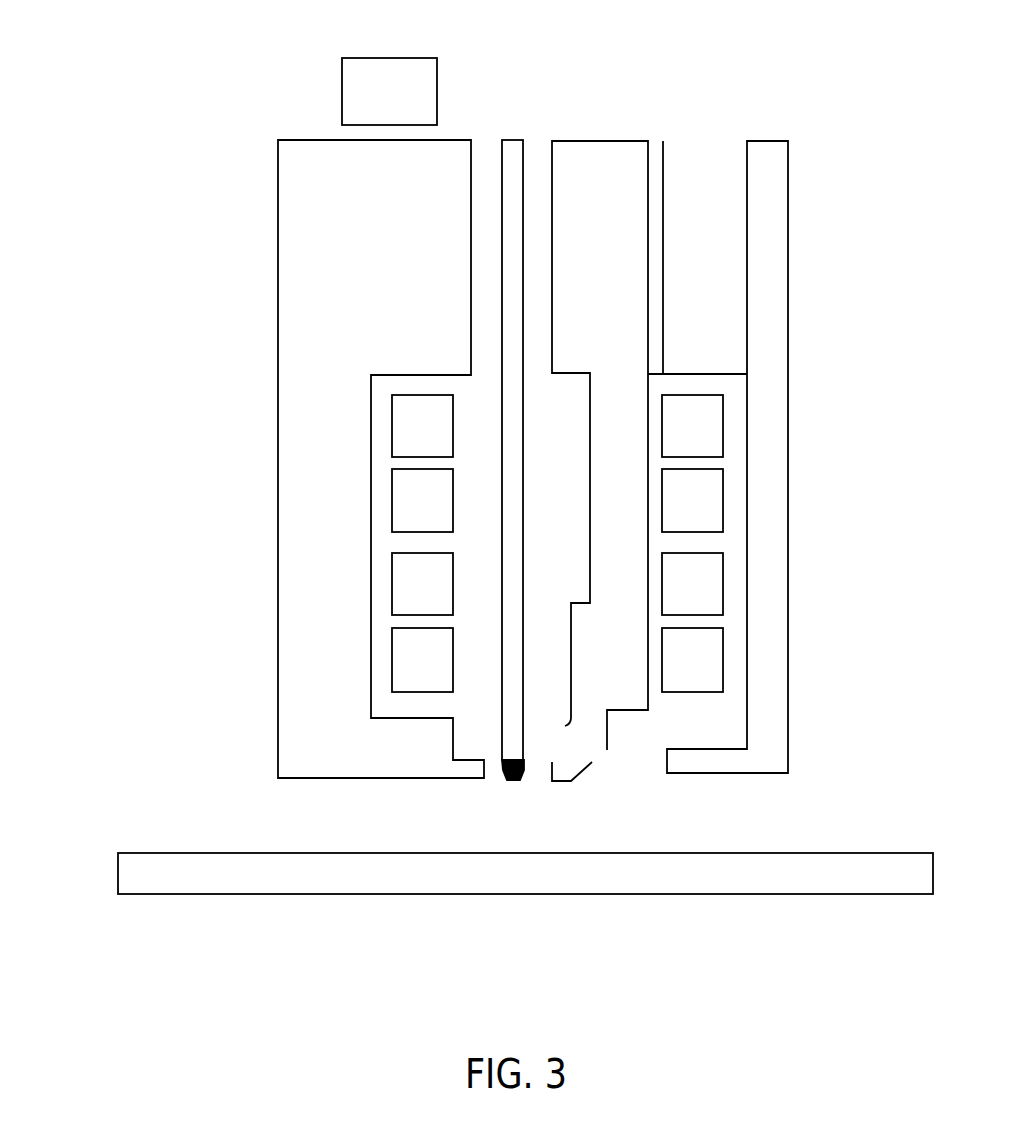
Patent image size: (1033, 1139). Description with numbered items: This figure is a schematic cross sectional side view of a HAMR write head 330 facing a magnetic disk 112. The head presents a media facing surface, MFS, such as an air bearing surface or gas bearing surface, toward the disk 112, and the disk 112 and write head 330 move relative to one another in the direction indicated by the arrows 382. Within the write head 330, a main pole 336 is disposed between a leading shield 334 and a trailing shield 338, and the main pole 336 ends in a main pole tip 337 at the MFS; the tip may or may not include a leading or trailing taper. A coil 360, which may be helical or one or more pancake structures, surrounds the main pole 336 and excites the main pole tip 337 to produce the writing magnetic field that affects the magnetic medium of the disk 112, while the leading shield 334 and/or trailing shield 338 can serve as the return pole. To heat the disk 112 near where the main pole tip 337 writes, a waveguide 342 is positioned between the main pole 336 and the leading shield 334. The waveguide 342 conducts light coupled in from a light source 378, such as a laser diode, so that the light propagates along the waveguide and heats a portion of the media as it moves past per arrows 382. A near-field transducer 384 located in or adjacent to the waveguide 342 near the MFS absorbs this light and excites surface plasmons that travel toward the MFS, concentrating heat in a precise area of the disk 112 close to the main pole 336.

The HAMR write head 330 is at (164, 63).
The light source 378 is at (512, 140).
The leading shield 334 is at (295, 557).
The coil 360 is at (402, 438).
The waveguide 342 is at (512, 297).
The near-field transducer 384 is at (504, 762).
The main pole 336 is at (602, 537).
The main pole tip 337 is at (549, 757).
The trailing shield 338 is at (770, 510).
The arrows 382 is at (889, 301).
The media facing surface MFS is at (741, 780).
The magnetic disk 112 is at (520, 885).